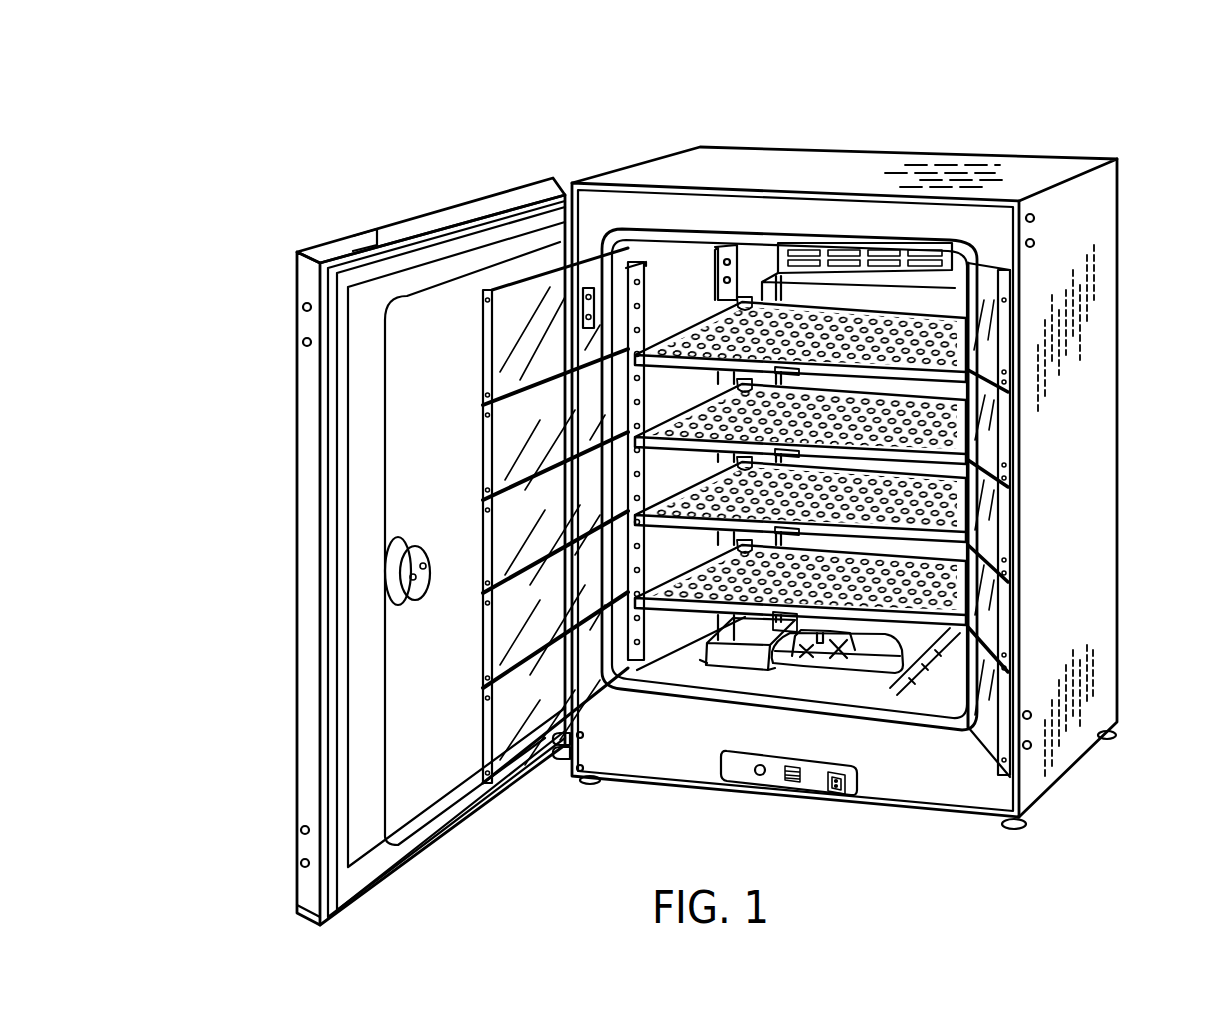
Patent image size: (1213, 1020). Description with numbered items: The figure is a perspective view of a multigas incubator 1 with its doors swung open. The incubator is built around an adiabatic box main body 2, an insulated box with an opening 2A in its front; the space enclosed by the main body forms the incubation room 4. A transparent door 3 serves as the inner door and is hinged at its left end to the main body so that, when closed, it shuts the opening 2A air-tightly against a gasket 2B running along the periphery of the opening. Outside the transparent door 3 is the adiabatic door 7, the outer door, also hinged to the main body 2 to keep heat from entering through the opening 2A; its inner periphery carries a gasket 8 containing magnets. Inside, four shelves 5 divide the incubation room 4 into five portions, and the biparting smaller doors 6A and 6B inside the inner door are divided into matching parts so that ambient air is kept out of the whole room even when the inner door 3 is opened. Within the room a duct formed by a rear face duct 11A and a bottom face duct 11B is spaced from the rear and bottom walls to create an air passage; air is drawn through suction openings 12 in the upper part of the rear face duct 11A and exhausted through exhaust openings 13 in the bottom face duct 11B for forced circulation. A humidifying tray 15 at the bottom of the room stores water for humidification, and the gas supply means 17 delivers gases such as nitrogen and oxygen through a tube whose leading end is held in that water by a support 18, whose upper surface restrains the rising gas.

The multigas incubator 1 is at (1119, 178).
The adiabatic box main body 2 is at (1046, 176).
The opening 2A is at (744, 240).
The gasket 2B is at (952, 730).
The transparent door 3 is at (428, 312).
The incubation room 4 is at (663, 265).
The shelves 5 is at (700, 330).
The smaller door 6A is at (520, 295).
The smaller door 6B is at (985, 427).
The adiabatic door 7 is at (395, 218).
The gasket 8 is at (353, 873).
The rear face duct 11A is at (868, 290).
The bottom face duct 11B is at (717, 673).
The suction openings 12 is at (805, 245).
The exhaust openings 13 is at (747, 637).
The humidifying tray 15 is at (880, 687).
The gas supply means 17 is at (820, 653).
The support 18 is at (840, 658).